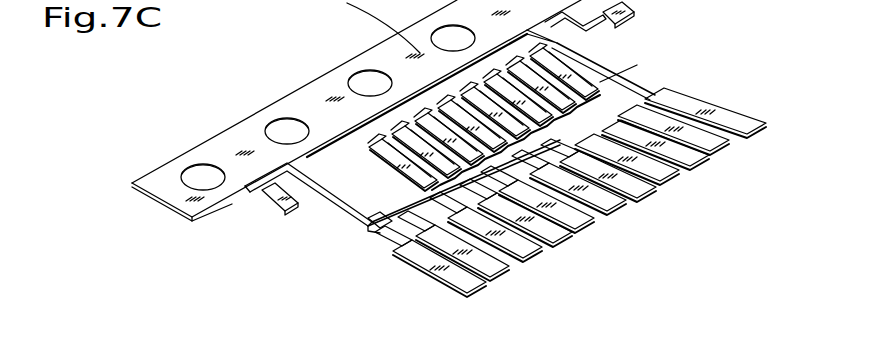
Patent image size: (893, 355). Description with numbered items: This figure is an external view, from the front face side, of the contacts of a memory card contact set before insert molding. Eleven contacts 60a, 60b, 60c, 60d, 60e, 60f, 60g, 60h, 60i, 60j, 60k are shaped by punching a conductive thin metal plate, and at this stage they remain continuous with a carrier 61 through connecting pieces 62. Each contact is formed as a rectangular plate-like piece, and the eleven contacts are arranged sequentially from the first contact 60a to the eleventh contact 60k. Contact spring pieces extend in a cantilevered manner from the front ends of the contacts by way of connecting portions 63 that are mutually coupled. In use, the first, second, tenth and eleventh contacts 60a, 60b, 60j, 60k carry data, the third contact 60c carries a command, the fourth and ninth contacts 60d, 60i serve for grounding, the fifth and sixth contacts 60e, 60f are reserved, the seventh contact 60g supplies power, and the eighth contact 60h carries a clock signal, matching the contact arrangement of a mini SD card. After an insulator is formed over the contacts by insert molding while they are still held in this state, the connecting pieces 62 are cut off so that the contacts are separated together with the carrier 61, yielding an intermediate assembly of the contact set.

The carrier 61 is at (310, 97).
The connecting pieces 62 is at (340, 193).
The connecting portions 63 is at (374, 240).
The first contact 60a is at (395, 143).
The second contact 60b is at (480, 277).
The third contact 60c is at (545, 256).
The fourth contact 60d is at (567, 240).
The fifth contact 60e is at (590, 224).
The sixth contact 60f is at (615, 212).
The seventh contact 60g is at (655, 194).
The eighth contact 60h is at (665, 190).
The ninth contact 60i is at (690, 170).
The tenth contact 60j is at (718, 152).
The eleventh contact 60k is at (717, 107).